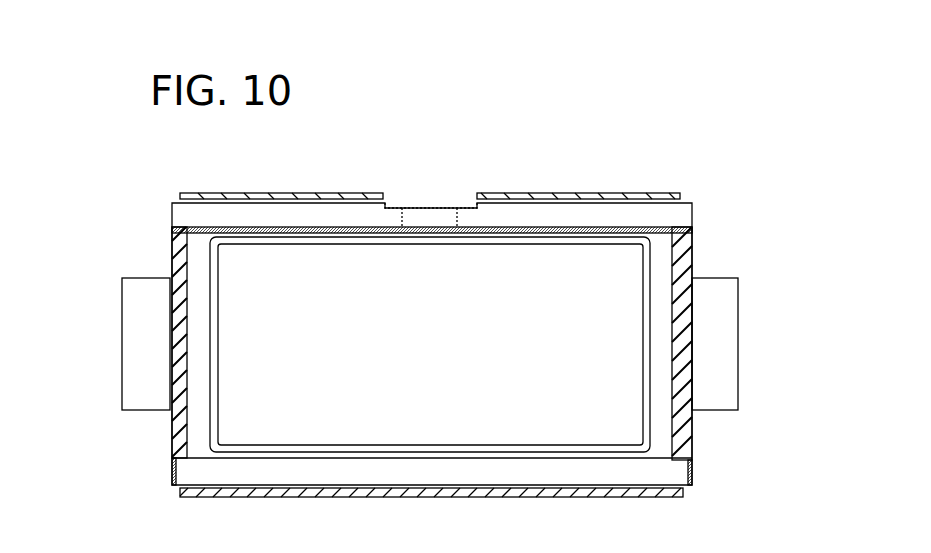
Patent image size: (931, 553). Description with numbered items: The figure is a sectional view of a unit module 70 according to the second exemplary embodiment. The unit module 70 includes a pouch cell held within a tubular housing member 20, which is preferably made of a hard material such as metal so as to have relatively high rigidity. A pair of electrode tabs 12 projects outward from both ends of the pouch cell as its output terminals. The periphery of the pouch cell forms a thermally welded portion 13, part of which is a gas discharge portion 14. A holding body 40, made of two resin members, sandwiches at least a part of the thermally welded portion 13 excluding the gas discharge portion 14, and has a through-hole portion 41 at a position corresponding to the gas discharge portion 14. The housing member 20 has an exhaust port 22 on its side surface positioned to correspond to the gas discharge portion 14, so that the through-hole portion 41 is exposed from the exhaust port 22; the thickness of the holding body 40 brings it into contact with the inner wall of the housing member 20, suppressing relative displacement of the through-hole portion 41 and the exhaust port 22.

The unit module 70 is at (849, 98).
The housing member 20 is at (446, 299).
The exhaust port 22 is at (445, 169).
The holding body 40 is at (431, 304).
The through-hole portion 41 is at (289, 166).
The thermally welded portion 13 is at (487, 321).
The gas discharge portion 14 is at (396, 289).
The electrode tab 12 is at (429, 359).